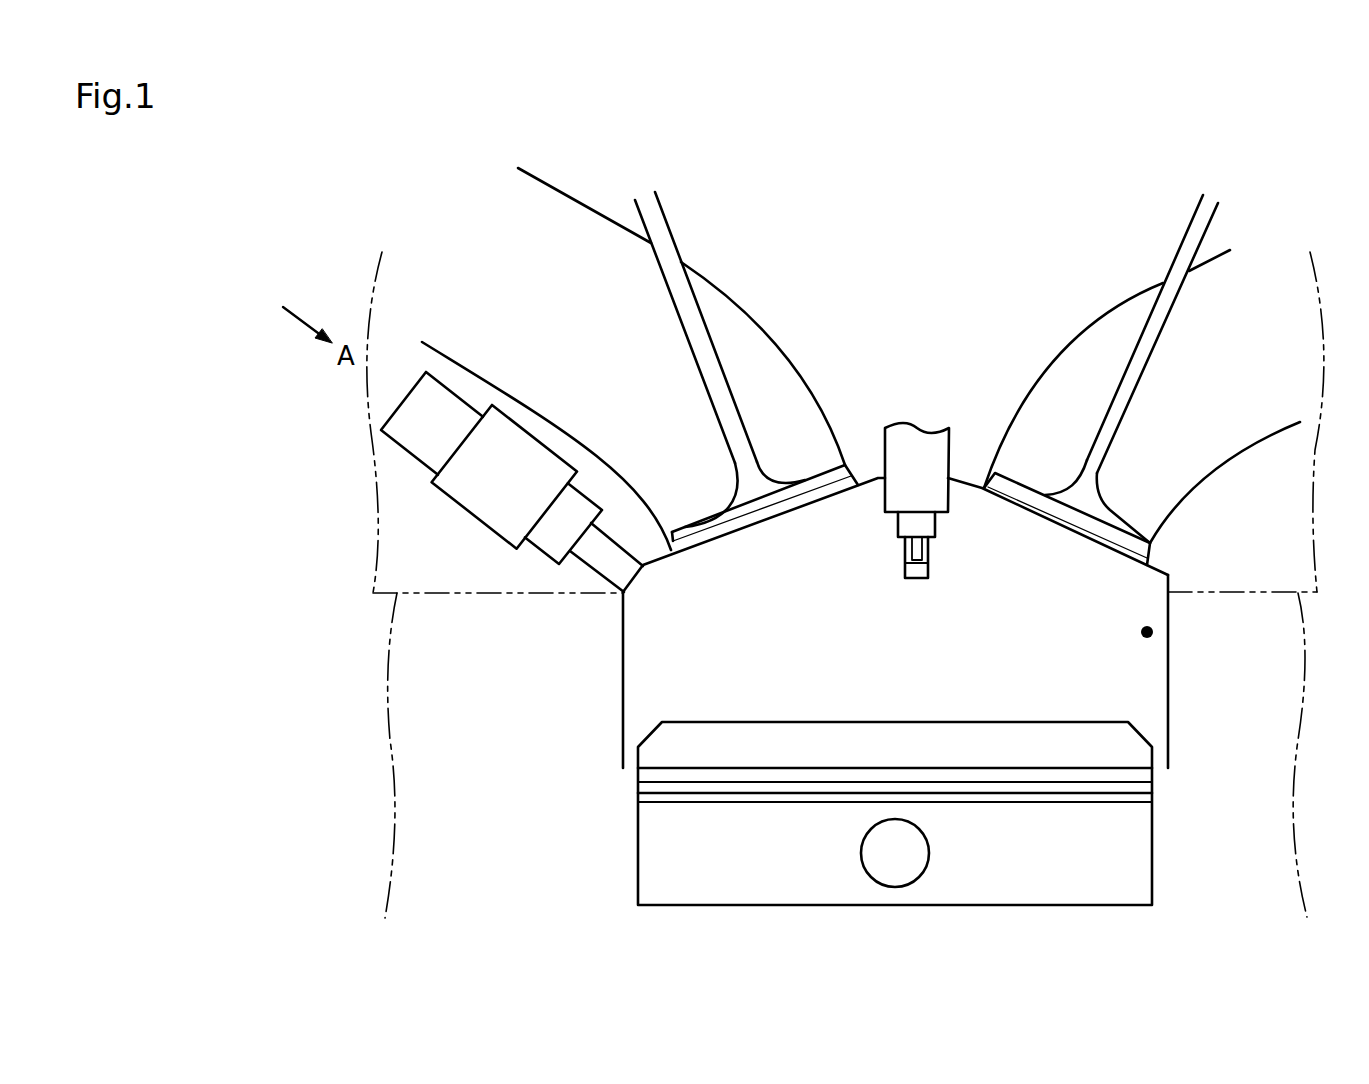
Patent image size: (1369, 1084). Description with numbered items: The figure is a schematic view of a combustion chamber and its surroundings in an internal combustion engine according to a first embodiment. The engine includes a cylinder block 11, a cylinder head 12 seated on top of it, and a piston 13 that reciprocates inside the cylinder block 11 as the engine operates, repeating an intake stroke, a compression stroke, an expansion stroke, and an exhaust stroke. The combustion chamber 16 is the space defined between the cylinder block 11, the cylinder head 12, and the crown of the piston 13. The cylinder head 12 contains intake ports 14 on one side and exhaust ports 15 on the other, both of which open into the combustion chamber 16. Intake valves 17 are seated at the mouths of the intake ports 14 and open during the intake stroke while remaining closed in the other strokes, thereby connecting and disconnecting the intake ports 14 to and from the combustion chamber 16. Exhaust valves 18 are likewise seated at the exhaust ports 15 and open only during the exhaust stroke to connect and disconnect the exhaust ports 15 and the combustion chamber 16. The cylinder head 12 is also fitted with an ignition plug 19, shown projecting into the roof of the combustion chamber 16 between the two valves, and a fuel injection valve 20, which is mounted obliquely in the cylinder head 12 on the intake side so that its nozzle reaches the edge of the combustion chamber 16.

The cylinder block 11 is at (398, 787).
The cylinder head 12 is at (380, 484).
The piston 13 is at (1018, 722).
The intake port 14 is at (838, 447).
The exhaust port 15 is at (997, 463).
The combustion chamber 16 is at (1153, 632).
The intake valve 17 is at (700, 382).
The exhaust valve 18 is at (1140, 381).
The ignition plug 19 is at (885, 510).
The fuel injection valve 20 is at (537, 440).